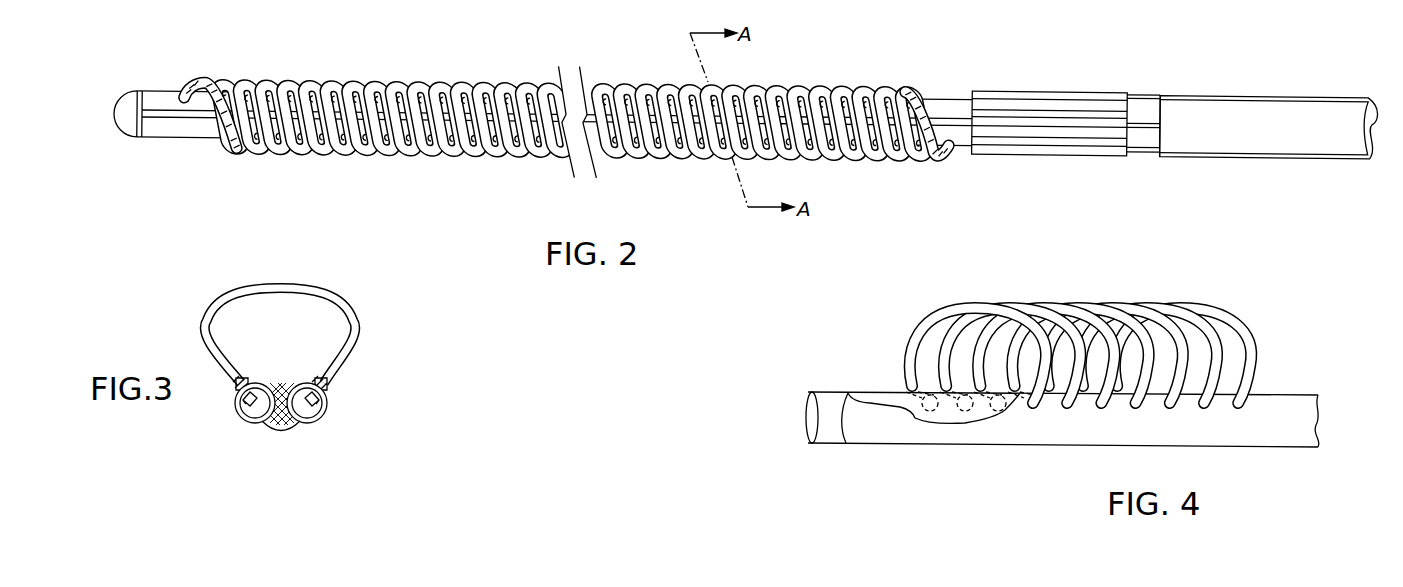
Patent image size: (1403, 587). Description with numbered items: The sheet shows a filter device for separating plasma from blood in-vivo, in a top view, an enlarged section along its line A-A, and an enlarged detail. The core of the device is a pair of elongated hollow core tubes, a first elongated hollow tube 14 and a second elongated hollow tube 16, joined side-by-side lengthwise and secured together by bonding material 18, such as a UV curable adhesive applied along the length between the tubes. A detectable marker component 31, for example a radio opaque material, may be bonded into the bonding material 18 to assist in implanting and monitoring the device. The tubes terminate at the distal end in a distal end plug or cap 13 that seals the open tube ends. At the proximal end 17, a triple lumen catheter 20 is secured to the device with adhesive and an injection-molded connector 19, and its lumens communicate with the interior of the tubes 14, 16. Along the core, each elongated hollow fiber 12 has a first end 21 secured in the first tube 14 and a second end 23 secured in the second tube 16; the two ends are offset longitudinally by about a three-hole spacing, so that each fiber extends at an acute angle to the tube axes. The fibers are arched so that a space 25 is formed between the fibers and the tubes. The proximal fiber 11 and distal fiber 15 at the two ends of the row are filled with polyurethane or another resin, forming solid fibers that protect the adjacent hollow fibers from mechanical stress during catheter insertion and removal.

In FIG. 2, the proximal fiber 11 is at (906, 88).
In FIG. 2, the elongated hollow fiber 12 is at (392, 84).
In FIG. 3, the elongated hollow fiber 12 is at (312, 322).
In FIG. 4, the elongated hollow fiber 12 is at (940, 312).
In FIG. 2, the distal end plug or cap 13 is at (115, 112).
In FIG. 2, the first elongated hollow tube 14 is at (161, 140).
In FIG. 3, the first elongated hollow tube 14 is at (320, 428).
In FIG. 4, the first elongated hollow tube 14 is at (877, 435).
In FIG. 2, the distal fiber 15 is at (236, 152).
In FIG. 2, the second elongated hollow tube 16 is at (166, 93).
In FIG. 3, the second elongated hollow tube 16 is at (252, 424).
In FIG. 4, the second elongated hollow tube 16 is at (808, 395).
In FIG. 2, the proximal end 17 is at (970, 95).
In FIG. 3, the bonding material 18 is at (287, 385).
In FIG. 2, the injection-molded connector 19 is at (1045, 92).
In FIG. 2, the triple lumen catheter 20 is at (1258, 96).
In FIG. 3, the first end 21 is at (325, 412).
In FIG. 4, the first end 21 is at (1035, 410).
In FIG. 3, the second end 23 is at (232, 413).
In FIG. 3, the space 25 is at (310, 347).
In FIG. 4, the space 25 is at (925, 365).
In FIG. 3, the detectable marker component 31 is at (277, 435).